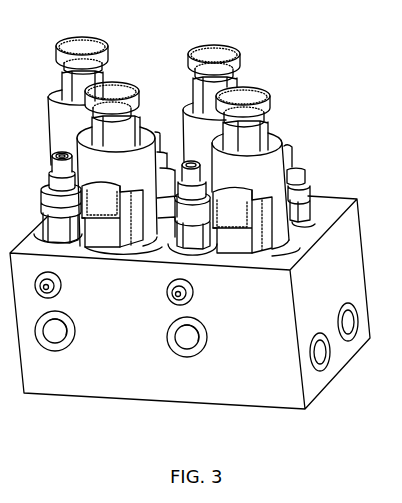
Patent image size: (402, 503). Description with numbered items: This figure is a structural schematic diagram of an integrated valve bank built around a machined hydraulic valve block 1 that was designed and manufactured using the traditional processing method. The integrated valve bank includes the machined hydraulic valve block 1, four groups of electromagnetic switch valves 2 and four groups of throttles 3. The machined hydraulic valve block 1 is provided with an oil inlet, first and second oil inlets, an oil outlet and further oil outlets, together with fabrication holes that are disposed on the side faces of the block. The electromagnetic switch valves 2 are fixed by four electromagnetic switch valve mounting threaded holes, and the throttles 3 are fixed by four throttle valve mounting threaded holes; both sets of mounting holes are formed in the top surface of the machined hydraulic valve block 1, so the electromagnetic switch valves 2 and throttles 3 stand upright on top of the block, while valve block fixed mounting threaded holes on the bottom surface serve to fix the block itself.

The machined hydraulic valve block 1 is at (328, 207).
The electromagnetic switch valve 2 is at (220, 57).
The throttle 3 is at (54, 155).